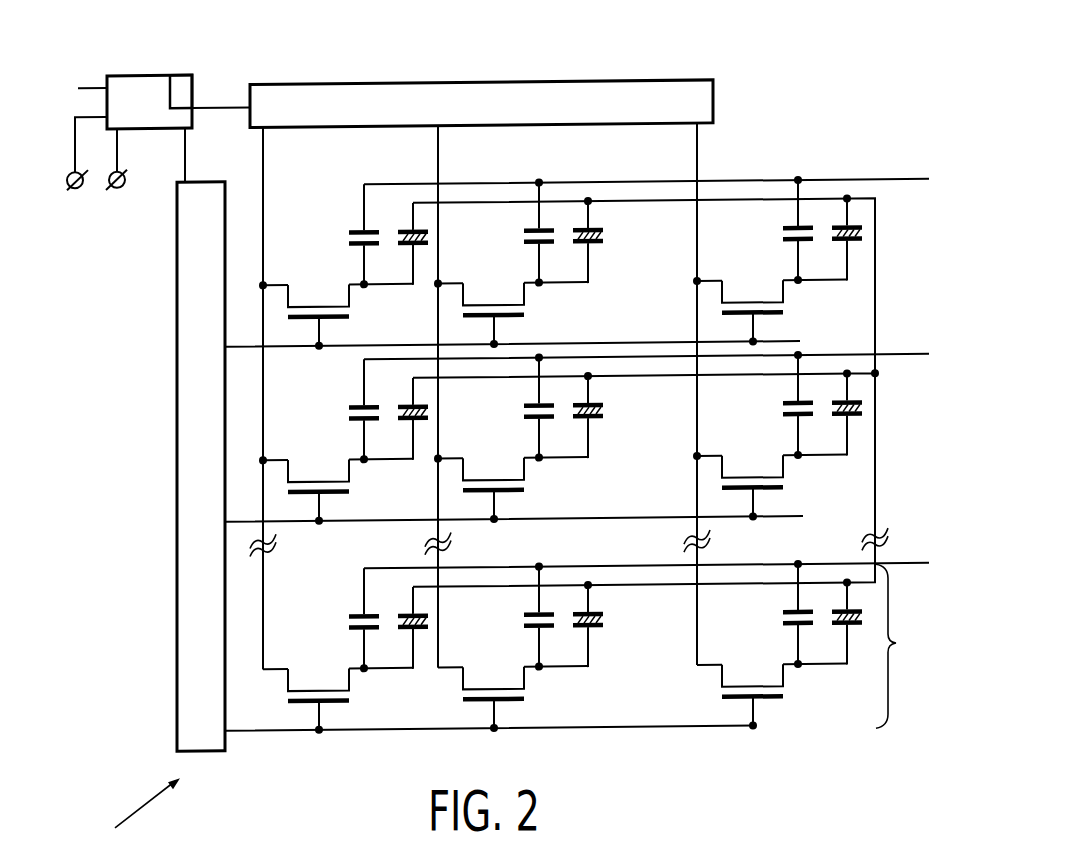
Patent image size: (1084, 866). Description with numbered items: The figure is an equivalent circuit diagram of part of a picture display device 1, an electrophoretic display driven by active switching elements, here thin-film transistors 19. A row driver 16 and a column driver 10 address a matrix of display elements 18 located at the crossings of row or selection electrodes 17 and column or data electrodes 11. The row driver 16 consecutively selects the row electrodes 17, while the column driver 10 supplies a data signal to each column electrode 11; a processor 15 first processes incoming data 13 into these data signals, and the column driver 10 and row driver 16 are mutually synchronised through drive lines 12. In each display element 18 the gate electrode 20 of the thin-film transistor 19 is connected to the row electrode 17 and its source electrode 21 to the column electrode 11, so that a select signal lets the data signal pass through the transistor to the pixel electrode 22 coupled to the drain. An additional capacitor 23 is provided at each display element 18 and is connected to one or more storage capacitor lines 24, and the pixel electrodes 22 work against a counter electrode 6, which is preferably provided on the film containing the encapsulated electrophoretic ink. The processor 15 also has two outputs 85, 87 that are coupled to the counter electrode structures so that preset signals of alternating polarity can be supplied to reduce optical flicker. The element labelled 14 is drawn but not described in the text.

The picture display device 1 is at (110, 845).
The counter electrode 6 is at (877, 279).
The column driver 10 is at (583, 96).
The column electrode 11 is at (265, 163).
The drive line 12 is at (218, 104).
The incoming data 13 is at (93, 84).
The control unit 14 is at (181, 88).
The processor 15 is at (140, 84).
The row driver 16 is at (190, 482).
The row electrode 17 is at (248, 343).
The display element 18 is at (425, 236).
The thin-film transistor 19 is at (352, 308).
The gate electrode 20 is at (333, 348).
The source electrode 21 is at (270, 280).
The pixel electrode 22 is at (360, 282).
The additional capacitor 23 is at (349, 235).
The storage capacitor line 24 is at (905, 185).
The output of the processor 85 is at (78, 186).
The output of the processor 87 is at (117, 186).